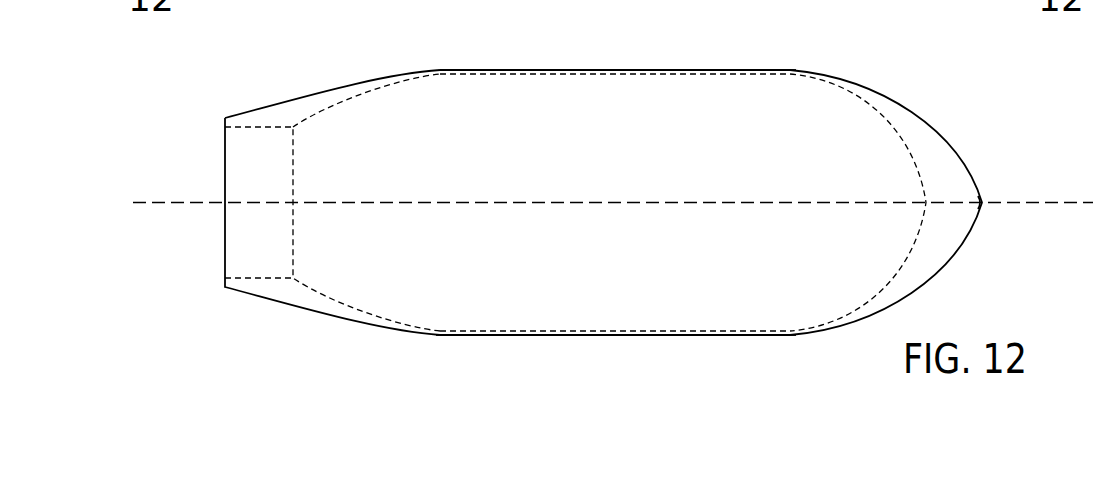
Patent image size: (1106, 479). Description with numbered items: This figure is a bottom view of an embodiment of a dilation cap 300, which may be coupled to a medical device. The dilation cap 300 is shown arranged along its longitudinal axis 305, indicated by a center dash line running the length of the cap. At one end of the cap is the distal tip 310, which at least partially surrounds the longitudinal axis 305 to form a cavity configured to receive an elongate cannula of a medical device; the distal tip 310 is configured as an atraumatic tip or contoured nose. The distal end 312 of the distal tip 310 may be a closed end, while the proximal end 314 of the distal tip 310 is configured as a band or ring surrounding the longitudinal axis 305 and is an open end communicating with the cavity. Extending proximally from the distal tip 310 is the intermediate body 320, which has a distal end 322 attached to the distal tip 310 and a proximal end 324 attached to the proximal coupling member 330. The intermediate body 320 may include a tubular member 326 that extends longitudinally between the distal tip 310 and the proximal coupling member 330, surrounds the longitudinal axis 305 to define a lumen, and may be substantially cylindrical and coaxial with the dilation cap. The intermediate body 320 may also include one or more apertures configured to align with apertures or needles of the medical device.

The dilation cap 300 is at (614, 198).
The longitudinal axis 305 is at (213, 202).
The distal tip 310 is at (954, 119).
The distal end 312 is at (791, 70).
The proximal end 314 is at (982, 202).
The intermediate body 320 is at (618, 60).
The distal end 322 is at (790, 336).
The proximal end 324 is at (447, 336).
The tubular member 326 is at (690, 0).
The proximal coupling member 330 is at (269, 82).